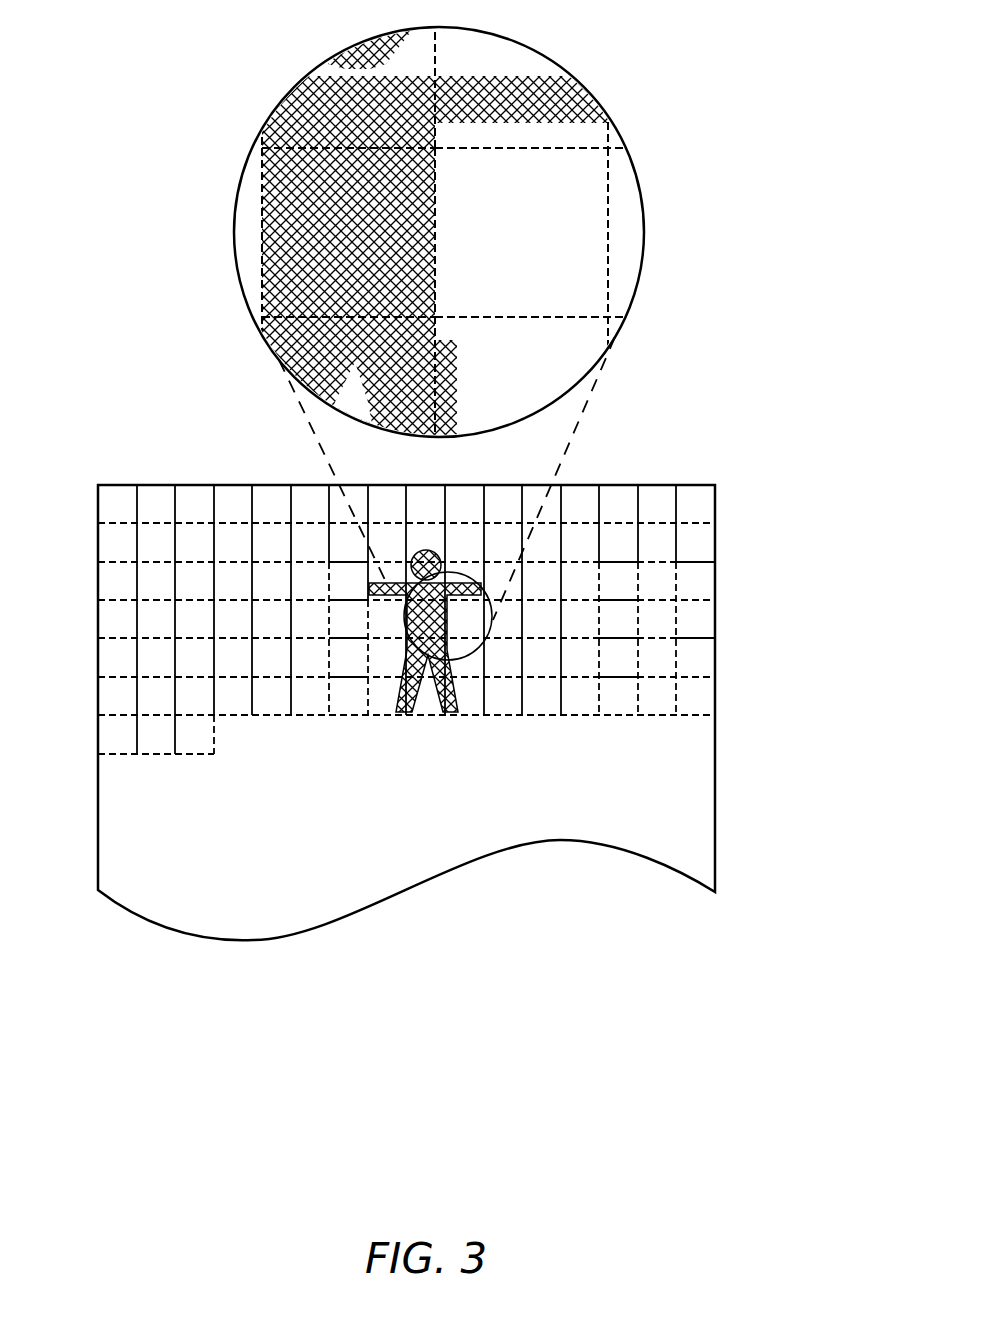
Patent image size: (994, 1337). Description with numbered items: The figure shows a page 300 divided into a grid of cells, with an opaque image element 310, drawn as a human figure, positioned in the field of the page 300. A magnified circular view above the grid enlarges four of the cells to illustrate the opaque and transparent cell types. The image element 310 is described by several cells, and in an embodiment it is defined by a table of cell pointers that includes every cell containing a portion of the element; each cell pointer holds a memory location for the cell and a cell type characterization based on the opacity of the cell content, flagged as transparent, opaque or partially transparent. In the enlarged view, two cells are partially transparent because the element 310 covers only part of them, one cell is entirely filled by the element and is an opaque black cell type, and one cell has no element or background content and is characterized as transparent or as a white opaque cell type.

The page 300 is at (222, 892).
The image element 310 is at (553, 759).